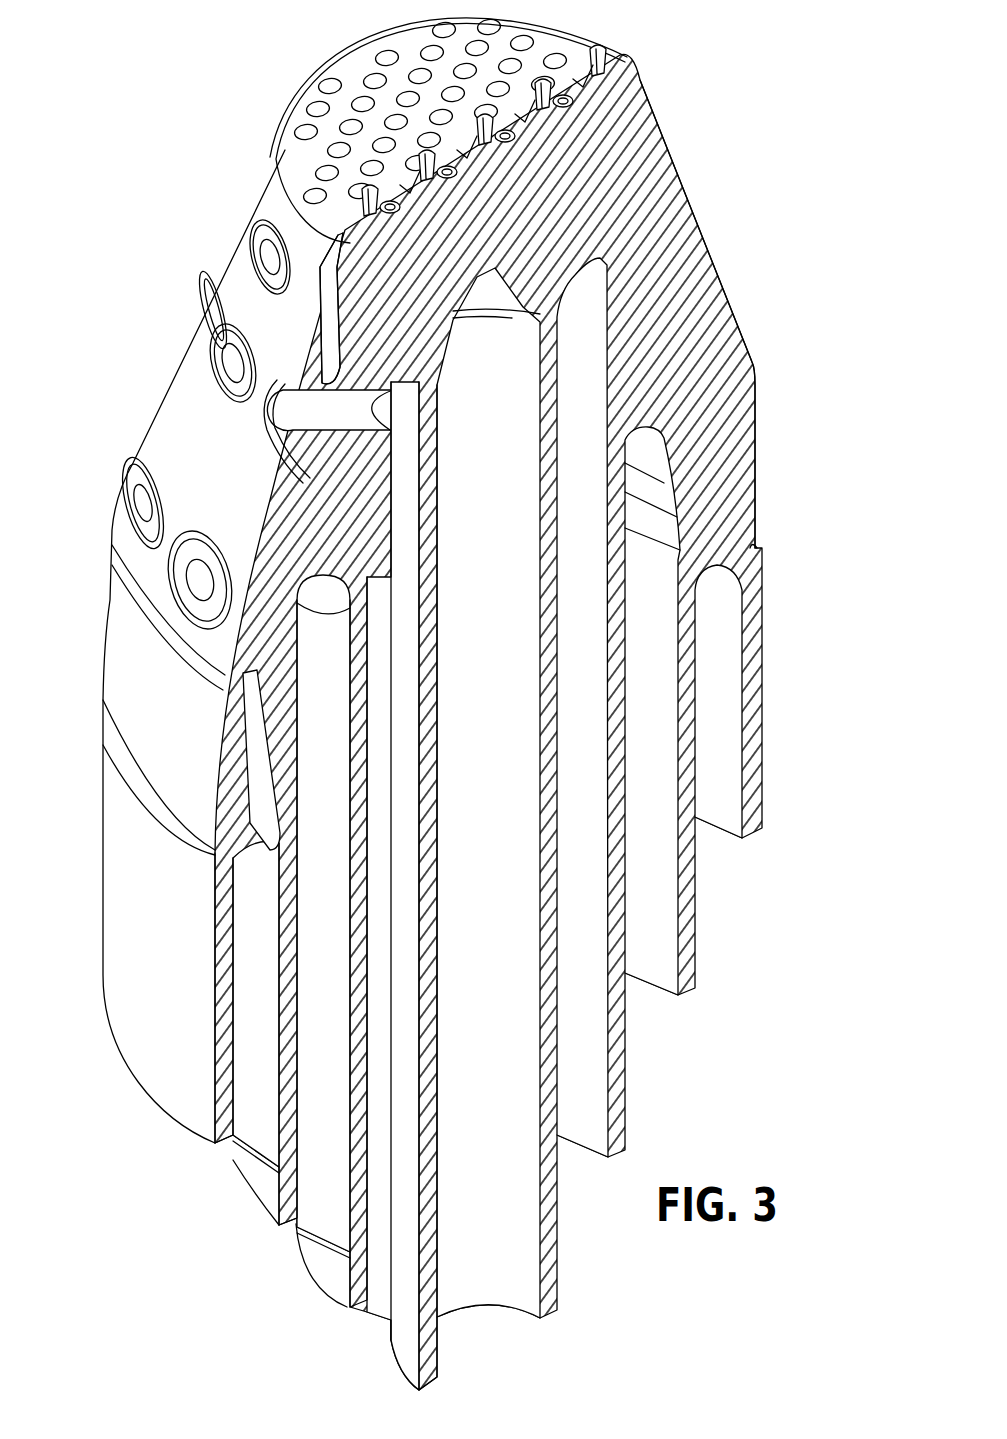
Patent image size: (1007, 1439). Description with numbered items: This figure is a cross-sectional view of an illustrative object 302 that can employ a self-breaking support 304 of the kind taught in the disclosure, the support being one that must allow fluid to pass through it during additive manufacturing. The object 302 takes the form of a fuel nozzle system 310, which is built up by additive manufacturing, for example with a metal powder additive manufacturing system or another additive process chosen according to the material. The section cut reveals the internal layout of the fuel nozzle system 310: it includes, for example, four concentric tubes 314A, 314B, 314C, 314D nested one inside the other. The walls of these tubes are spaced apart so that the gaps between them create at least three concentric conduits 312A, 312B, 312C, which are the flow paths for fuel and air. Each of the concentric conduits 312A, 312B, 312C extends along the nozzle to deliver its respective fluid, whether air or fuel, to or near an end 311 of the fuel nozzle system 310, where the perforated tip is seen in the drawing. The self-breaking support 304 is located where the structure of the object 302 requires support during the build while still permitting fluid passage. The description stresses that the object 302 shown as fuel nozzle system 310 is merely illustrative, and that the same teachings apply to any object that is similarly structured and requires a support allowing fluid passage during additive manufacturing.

The object 302 is at (705, 138).
The self-breaking support 304 is at (353, 243).
The fuel nozzle system 310 is at (738, 210).
The end 311 is at (573, 57).
The concentric conduit 312A is at (488, 957).
The concentric conduit 312B is at (577, 903).
The concentric conduit 312C is at (662, 843).
The concentric tube 314A is at (427, 1175).
The concentric tube 314B is at (355, 1192).
The concentric tube 314C is at (287, 1123).
The concentric tube 314D is at (227, 1067).